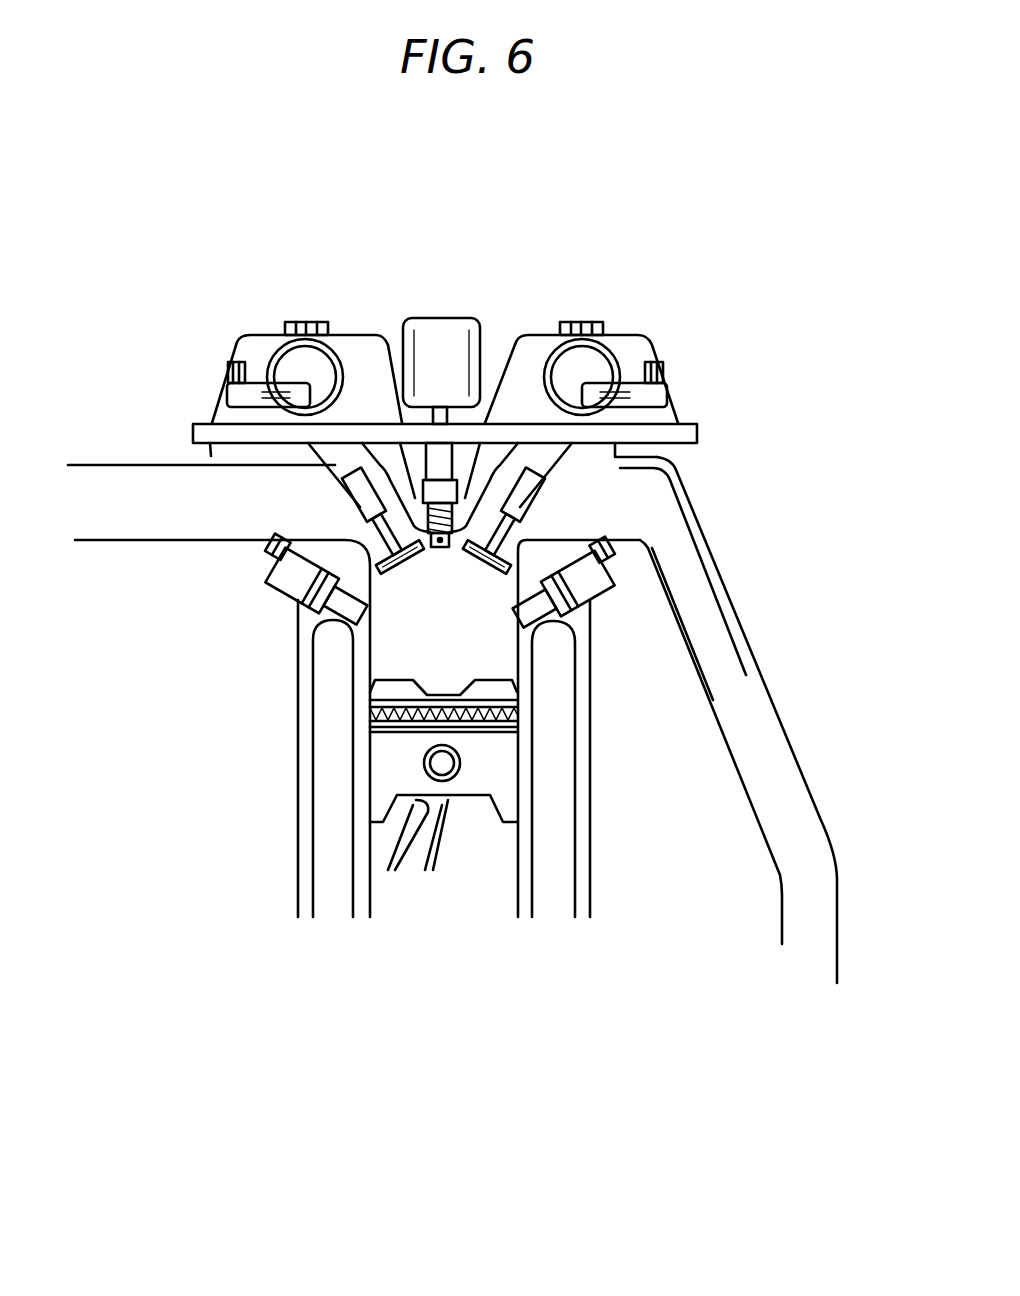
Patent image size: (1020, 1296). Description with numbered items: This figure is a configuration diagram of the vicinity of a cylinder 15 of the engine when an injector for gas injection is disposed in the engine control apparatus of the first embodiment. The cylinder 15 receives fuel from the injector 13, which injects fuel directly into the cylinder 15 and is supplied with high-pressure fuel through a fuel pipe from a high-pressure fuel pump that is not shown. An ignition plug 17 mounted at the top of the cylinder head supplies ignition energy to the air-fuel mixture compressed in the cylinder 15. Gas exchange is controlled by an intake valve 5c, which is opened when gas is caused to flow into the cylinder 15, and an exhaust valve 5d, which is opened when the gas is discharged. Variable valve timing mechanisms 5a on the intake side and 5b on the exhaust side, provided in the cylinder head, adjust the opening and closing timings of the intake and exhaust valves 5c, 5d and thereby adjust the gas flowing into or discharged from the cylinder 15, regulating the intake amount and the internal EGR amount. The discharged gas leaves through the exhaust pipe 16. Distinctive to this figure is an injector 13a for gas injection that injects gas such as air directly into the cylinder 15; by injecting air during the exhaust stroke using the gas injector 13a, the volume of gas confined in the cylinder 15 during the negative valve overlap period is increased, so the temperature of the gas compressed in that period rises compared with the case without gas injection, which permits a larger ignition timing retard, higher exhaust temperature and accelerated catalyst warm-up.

The variable valve timing mechanism (intake side) 5a is at (343, 327).
The variable valve timing mechanism (exhaust side) 5b is at (607, 337).
The intake valve 5c is at (380, 560).
The exhaust valve 5d is at (320, 617).
The injector 13 is at (272, 603).
The injector for gas injection 13a is at (612, 572).
The cylinder 15 is at (532, 672).
The exhaust pipe 16 is at (711, 567).
The ignition plug 17 is at (523, 333).